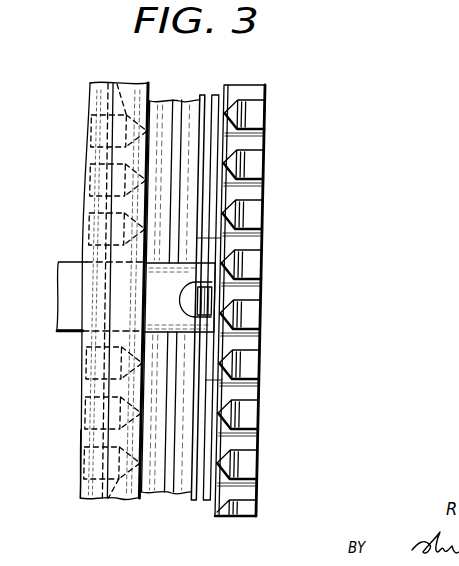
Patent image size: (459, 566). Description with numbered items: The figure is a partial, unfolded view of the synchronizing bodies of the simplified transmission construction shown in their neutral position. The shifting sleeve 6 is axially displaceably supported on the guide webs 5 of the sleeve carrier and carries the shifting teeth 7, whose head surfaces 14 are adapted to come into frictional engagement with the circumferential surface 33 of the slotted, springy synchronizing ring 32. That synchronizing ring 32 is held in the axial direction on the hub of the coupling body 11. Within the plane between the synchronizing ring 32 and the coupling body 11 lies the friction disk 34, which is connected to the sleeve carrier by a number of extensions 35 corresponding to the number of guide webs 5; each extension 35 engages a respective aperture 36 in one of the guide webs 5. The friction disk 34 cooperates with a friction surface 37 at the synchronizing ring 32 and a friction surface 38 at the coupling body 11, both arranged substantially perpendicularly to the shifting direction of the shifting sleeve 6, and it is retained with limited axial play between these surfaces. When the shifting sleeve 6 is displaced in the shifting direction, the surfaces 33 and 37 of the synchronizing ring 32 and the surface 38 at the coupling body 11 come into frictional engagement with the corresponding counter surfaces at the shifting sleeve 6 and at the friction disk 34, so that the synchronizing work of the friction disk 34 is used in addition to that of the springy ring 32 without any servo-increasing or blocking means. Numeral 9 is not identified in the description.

The guide webs 5 is at (72, 290).
The shifting sleeve 6 is at (85, 492).
The shifting teeth 7 is at (90, 136).
The knife sections 9 is at (256, 122).
The coupling body 11 is at (252, 192).
The head surfaces 14 is at (117, 84).
The synchronizing ring 32 is at (191, 102).
The circumferential surface 33 is at (157, 103).
The friction disk 34 is at (205, 236).
The extensions 35 is at (207, 295).
The aperture 36 is at (181, 297).
The friction surface 37 is at (194, 436).
The friction surface 38 is at (216, 388).